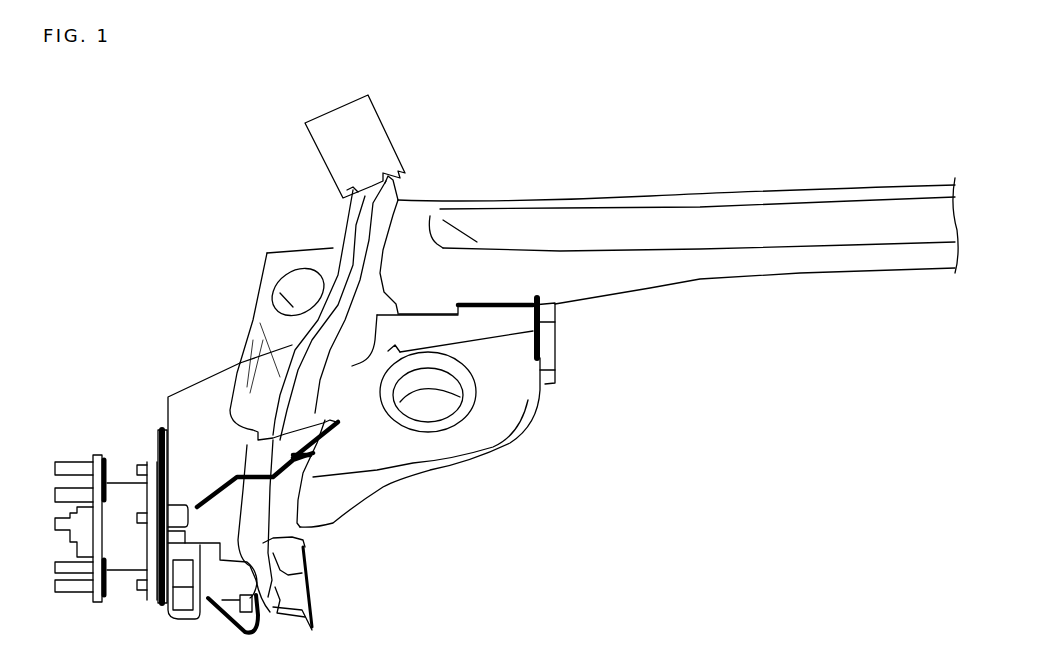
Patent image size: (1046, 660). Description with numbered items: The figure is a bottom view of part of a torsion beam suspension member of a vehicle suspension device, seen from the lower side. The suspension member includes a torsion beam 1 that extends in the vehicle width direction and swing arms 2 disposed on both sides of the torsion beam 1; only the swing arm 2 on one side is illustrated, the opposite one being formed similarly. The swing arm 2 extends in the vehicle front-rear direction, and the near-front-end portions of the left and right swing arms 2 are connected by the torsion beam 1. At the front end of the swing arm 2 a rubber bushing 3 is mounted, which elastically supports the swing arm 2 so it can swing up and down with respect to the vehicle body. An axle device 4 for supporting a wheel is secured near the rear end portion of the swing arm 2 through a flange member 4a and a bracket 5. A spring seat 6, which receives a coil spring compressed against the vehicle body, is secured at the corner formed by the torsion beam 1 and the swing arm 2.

The torsion beam 1 is at (733, 193).
The swing arm 2 is at (280, 373).
The rubber bushing 3 is at (373, 125).
The axle device 4 is at (128, 482).
The flange member 4a is at (160, 430).
The bracket 5 is at (202, 395).
The spring seat 6 is at (485, 430).